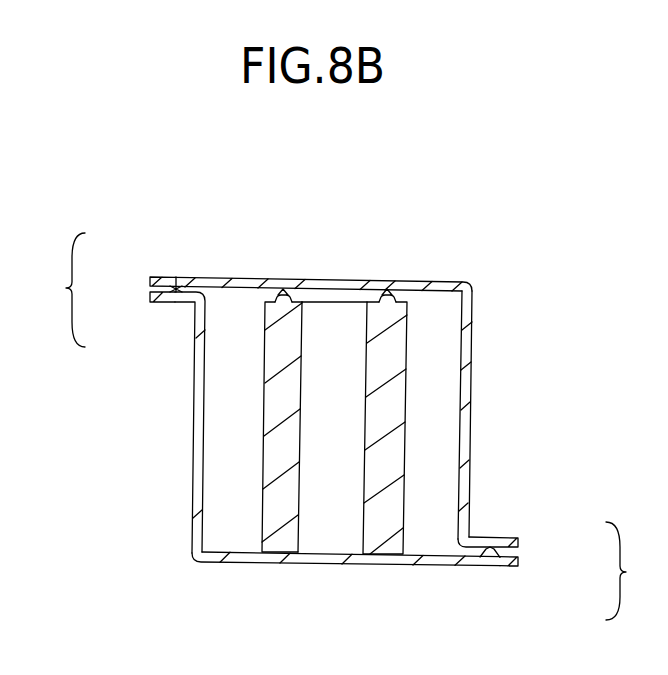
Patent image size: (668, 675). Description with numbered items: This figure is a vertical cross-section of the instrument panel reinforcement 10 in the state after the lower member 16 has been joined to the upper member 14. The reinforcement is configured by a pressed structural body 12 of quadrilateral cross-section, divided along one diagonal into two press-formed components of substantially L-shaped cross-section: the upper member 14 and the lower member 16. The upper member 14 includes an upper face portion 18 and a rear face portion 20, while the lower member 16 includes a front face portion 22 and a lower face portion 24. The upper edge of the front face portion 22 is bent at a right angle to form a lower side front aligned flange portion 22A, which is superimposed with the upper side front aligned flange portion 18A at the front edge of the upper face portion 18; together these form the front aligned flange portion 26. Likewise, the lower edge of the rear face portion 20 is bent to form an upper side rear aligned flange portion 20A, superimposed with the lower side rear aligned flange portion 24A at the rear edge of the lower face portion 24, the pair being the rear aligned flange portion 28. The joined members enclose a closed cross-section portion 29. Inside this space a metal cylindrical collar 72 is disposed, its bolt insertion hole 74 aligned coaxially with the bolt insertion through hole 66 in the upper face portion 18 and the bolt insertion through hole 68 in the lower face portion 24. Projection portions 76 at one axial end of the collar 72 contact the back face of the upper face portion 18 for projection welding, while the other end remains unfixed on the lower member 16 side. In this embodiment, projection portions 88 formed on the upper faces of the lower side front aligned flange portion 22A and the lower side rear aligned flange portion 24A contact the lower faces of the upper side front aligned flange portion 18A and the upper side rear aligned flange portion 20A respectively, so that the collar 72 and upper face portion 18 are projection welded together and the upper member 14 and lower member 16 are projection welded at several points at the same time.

The instrument panel reinforcement 10 is at (349, 353).
The pressed structural body 12 is at (466, 257).
The upper member 14 is at (474, 368).
The lower member 16 is at (258, 575).
The upper face portion 18 is at (240, 278).
The upper side front aligned flange portion 18A is at (150, 277).
The rear face portion 20 is at (471, 410).
The upper side rear aligned flange portion 20A is at (518, 540).
The front face portion 22 is at (193, 430).
The lower side front aligned flange portion 22A is at (150, 301).
The lower face portion 24 is at (426, 566).
The lower side rear aligned flange portion 24A is at (518, 566).
The front aligned flange portion 26 is at (59, 290).
The rear aligned flange portion 28 is at (631, 571).
The closed cross-section portion 29 is at (447, 428).
The bolt insertion through hole 66 is at (362, 285).
The bolt insertion through hole 68 is at (362, 555).
The collar 72 is at (256, 506).
The bolt insertion hole 74 is at (301, 519).
The projection portions 76 is at (282, 295).
The projection portions 88 is at (176, 277).